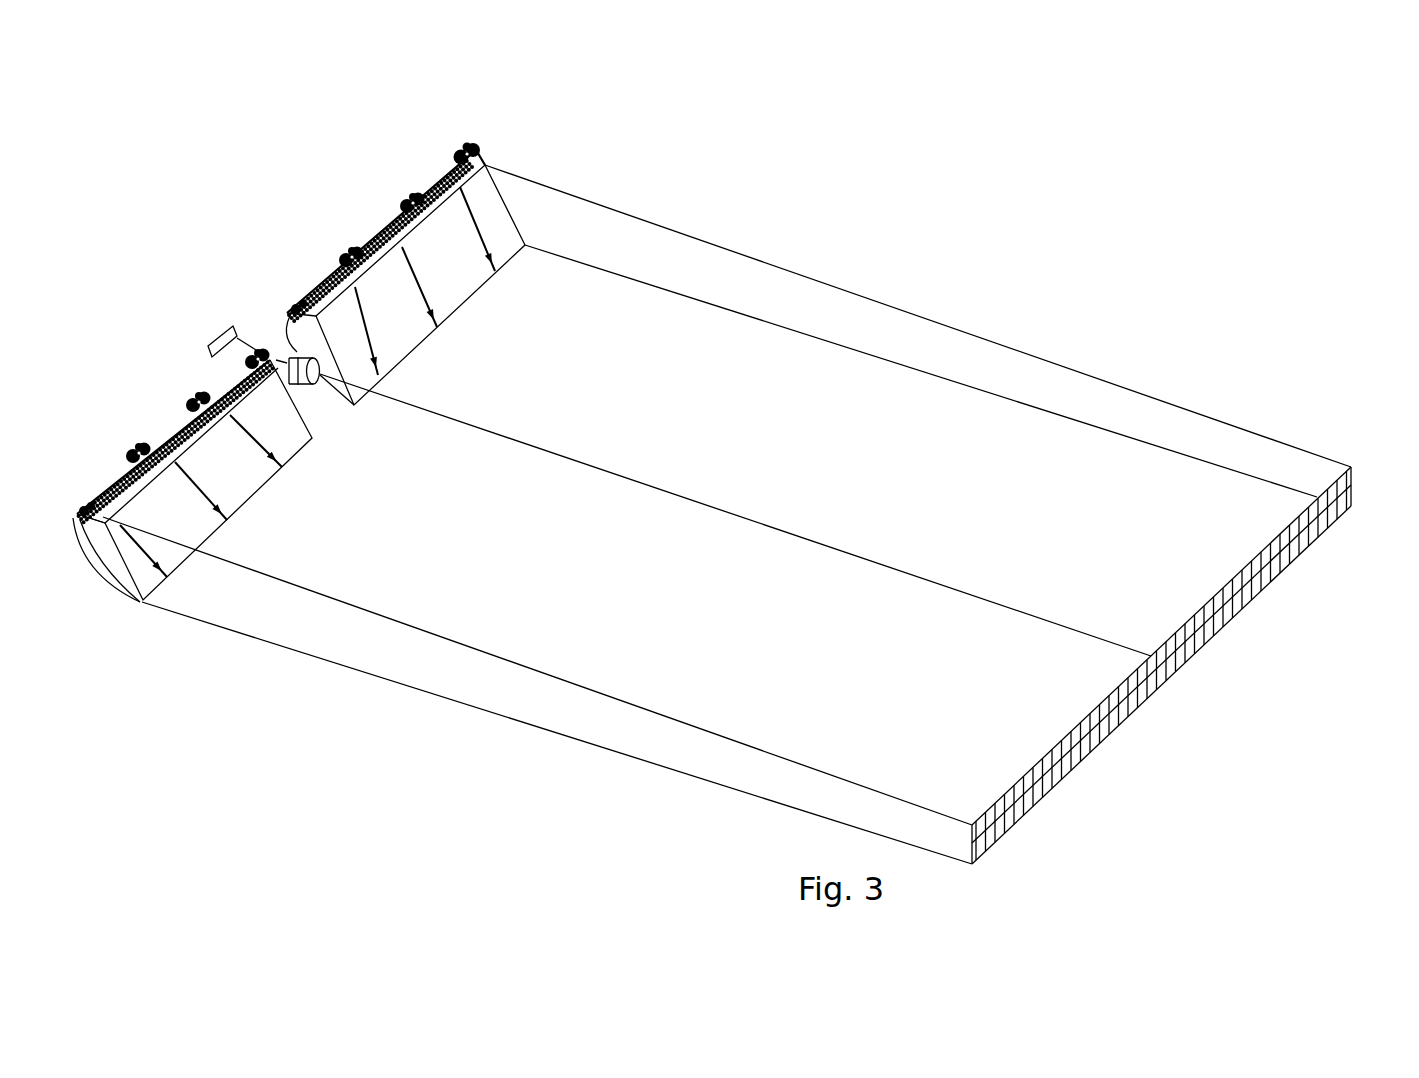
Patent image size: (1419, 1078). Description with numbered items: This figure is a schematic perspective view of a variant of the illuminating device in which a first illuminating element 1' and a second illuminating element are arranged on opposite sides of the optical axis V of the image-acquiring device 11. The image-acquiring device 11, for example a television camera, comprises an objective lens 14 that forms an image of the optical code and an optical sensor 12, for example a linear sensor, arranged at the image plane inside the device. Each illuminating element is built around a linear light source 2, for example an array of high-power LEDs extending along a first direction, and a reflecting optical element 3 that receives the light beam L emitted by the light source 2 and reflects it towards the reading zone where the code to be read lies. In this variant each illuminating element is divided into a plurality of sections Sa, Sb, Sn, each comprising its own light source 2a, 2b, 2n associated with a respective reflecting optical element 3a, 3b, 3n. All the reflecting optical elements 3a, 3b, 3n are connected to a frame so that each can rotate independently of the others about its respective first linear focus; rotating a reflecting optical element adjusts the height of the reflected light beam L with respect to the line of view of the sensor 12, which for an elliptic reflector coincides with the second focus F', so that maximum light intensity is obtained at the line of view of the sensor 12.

The light beam L is at (763, 285).
The optical axis V is at (727, 512).
The second focus F' is at (1190, 665).
The first illuminating element 1' is at (420, 235).
The linear light source 2 is at (470, 276).
The light source 2a is at (348, 286).
The light source 2b is at (402, 247).
The light source 2n is at (448, 192).
The reflecting optical element 3 is at (268, 263).
The reflecting optical element 3a is at (369, 347).
The reflecting optical element 3b is at (445, 298).
The reflecting optical element 3n is at (467, 229).
The section Sa is at (420, 370).
The section Sb is at (470, 335).
The section Sn is at (520, 288).
The image-acquiring device 11 is at (182, 293).
The optical sensor 12 is at (213, 330).
The objective lens 14 is at (248, 330).